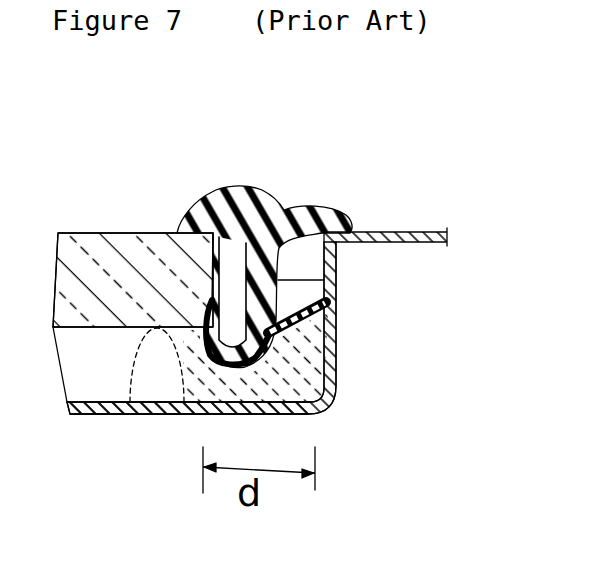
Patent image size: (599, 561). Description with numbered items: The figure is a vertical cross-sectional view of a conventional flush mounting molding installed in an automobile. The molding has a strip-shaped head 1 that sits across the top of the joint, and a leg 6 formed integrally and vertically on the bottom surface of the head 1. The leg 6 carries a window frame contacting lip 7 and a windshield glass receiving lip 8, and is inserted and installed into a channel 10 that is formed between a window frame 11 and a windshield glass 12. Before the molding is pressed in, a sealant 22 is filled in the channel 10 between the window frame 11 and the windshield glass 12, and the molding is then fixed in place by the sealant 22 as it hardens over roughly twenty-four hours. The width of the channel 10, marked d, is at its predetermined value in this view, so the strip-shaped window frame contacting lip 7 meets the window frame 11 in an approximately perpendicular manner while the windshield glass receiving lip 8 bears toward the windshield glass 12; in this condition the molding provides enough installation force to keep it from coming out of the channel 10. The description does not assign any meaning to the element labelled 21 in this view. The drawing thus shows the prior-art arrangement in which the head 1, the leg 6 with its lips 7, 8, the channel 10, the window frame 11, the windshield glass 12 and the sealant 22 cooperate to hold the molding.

The strip-shaped head 1 is at (233, 188).
The windshield glass 12 is at (96, 233).
The window frame 11 is at (408, 232).
The channel 10 is at (310, 259).
The leg 6 is at (278, 280).
The window frame contacting lip 7 is at (336, 316).
The windshield glass receiving lip 8 is at (213, 357).
The recess 21 is at (152, 383).
The sealant 22 is at (320, 417).